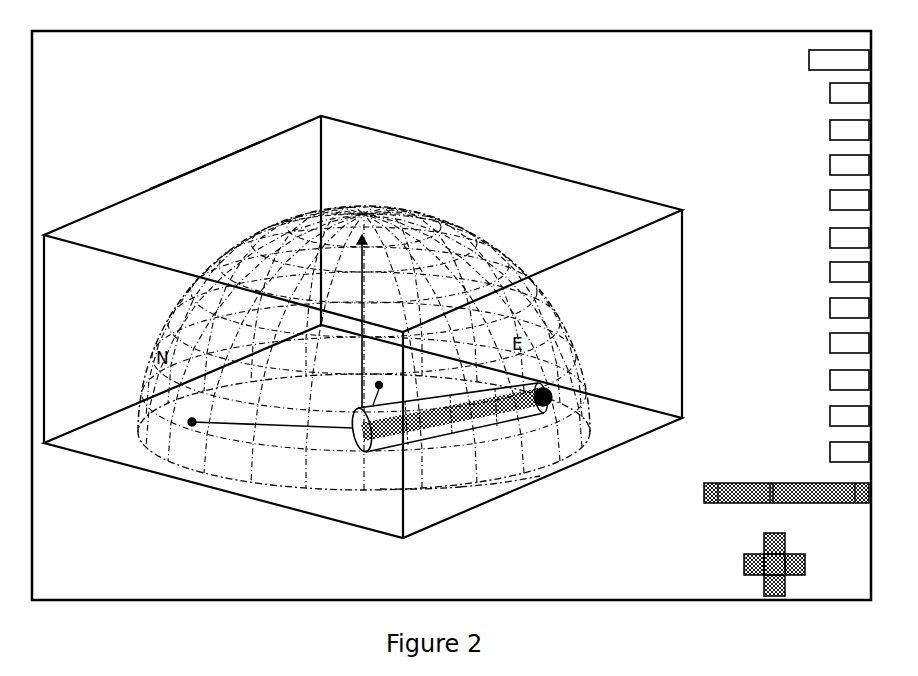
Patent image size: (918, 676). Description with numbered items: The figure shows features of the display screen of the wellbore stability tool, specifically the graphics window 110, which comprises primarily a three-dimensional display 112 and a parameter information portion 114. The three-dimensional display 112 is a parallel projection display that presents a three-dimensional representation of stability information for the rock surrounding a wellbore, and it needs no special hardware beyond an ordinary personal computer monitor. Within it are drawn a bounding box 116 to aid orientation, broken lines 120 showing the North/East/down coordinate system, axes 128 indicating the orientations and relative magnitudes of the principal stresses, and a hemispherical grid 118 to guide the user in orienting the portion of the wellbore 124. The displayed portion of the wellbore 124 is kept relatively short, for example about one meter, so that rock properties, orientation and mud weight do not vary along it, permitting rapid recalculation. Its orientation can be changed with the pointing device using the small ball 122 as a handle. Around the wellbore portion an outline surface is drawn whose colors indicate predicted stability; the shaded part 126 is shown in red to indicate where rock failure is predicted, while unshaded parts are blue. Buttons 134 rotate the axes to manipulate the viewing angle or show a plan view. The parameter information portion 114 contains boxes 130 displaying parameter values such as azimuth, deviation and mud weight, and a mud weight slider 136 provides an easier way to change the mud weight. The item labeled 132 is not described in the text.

The graphics window 110 is at (146, 123).
The three-dimensional display 112 is at (447, 133).
The parameter information 114 is at (625, 105).
The bounding box 116 is at (207, 164).
The hemispherical grid 118 is at (495, 244).
The broken lines 120 is at (200, 299).
The small ball 122 is at (549, 405).
The portion of the wellbore 124 is at (418, 450).
The shaded part of the outline surface 126 is at (495, 450).
The axes 128 is at (365, 367).
The boxes 130 is at (795, 124).
The horizontal stress input field 132 is at (697, 197).
The buttons 134 is at (745, 549).
The mud weight slider 136 is at (704, 485).